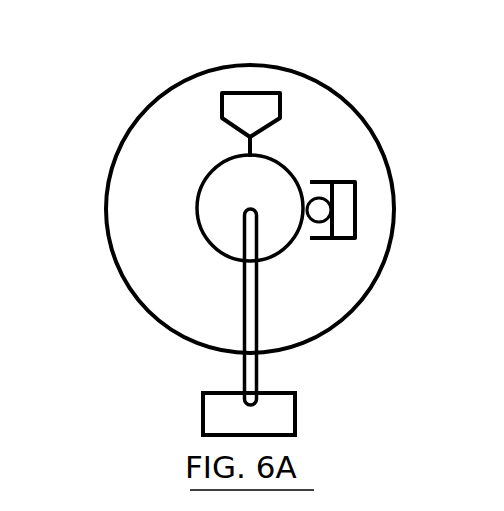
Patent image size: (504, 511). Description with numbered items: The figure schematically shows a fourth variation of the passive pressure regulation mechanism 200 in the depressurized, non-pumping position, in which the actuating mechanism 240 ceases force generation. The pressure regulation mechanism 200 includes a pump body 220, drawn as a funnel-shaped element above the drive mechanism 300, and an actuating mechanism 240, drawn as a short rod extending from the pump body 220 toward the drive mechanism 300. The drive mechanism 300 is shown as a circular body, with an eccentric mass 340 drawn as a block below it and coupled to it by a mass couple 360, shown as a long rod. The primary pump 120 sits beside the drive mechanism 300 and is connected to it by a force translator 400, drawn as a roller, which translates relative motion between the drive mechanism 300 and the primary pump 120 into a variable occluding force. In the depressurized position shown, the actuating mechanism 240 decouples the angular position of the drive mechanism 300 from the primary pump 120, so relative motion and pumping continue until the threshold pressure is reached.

The pressure regulation mechanism 200 is at (297, 100).
The pump body 220 is at (222, 107).
The actuating mechanism 240 is at (228, 127).
The drive mechanism 300 is at (222, 240).
The primary pump 120 is at (360, 168).
The force translator 400 is at (319, 219).
The mass couple 360 is at (257, 365).
The eccentric mass 340 is at (278, 410).